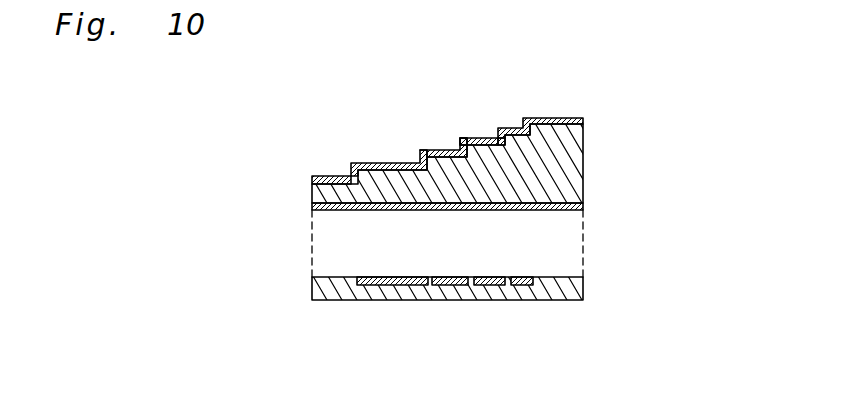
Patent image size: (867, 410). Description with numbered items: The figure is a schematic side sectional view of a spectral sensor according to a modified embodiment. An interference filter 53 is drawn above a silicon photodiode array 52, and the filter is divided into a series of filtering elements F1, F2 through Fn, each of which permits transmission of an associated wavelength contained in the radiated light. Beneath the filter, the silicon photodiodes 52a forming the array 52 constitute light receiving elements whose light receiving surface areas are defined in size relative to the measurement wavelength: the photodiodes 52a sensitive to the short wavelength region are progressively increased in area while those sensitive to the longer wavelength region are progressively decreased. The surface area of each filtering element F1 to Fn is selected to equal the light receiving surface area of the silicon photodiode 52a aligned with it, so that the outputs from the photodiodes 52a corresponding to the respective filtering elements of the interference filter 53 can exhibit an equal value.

The interference filter 53 is at (431, 165).
The filtering element F1 is at (373, 156).
The filtering element F2 is at (443, 144).
The filtering element Fn is at (518, 124).
The silicon photodiode array 52 is at (320, 287).
The silicon photodiodes 52a is at (402, 285).